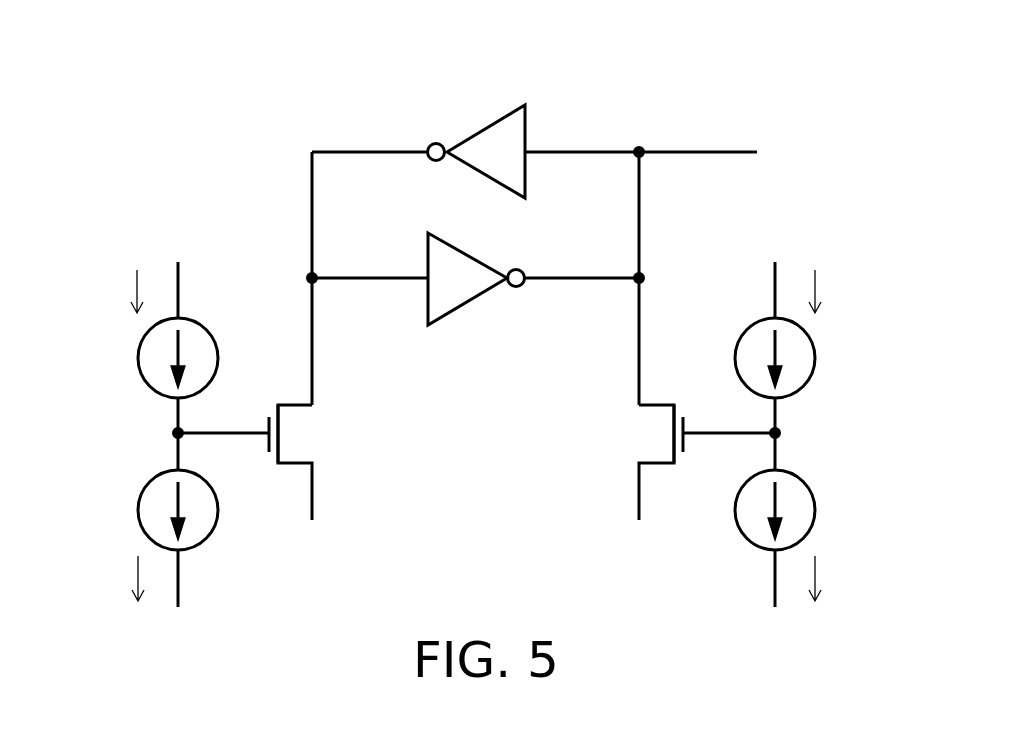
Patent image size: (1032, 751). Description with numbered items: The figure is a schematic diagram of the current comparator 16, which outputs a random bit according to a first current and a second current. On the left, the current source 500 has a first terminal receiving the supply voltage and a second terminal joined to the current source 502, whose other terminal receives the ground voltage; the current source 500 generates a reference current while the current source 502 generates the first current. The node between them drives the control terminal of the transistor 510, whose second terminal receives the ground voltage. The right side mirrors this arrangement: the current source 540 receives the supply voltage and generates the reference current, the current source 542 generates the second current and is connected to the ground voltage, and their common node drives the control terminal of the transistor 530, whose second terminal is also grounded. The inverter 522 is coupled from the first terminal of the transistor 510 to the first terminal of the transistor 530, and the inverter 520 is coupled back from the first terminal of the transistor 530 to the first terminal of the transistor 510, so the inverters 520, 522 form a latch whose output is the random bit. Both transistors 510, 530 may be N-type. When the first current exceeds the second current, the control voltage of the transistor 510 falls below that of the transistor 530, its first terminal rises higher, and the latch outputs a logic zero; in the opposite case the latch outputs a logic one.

The current comparator 16 is at (788, 101).
The current source 500 is at (138, 357).
The current source 502 is at (138, 507).
The transistor 510 is at (300, 456).
The inverter 520 is at (486, 127).
The inverter 522 is at (470, 252).
The transistor 530 is at (652, 456).
The current source 540 is at (815, 357).
The current source 542 is at (815, 507).